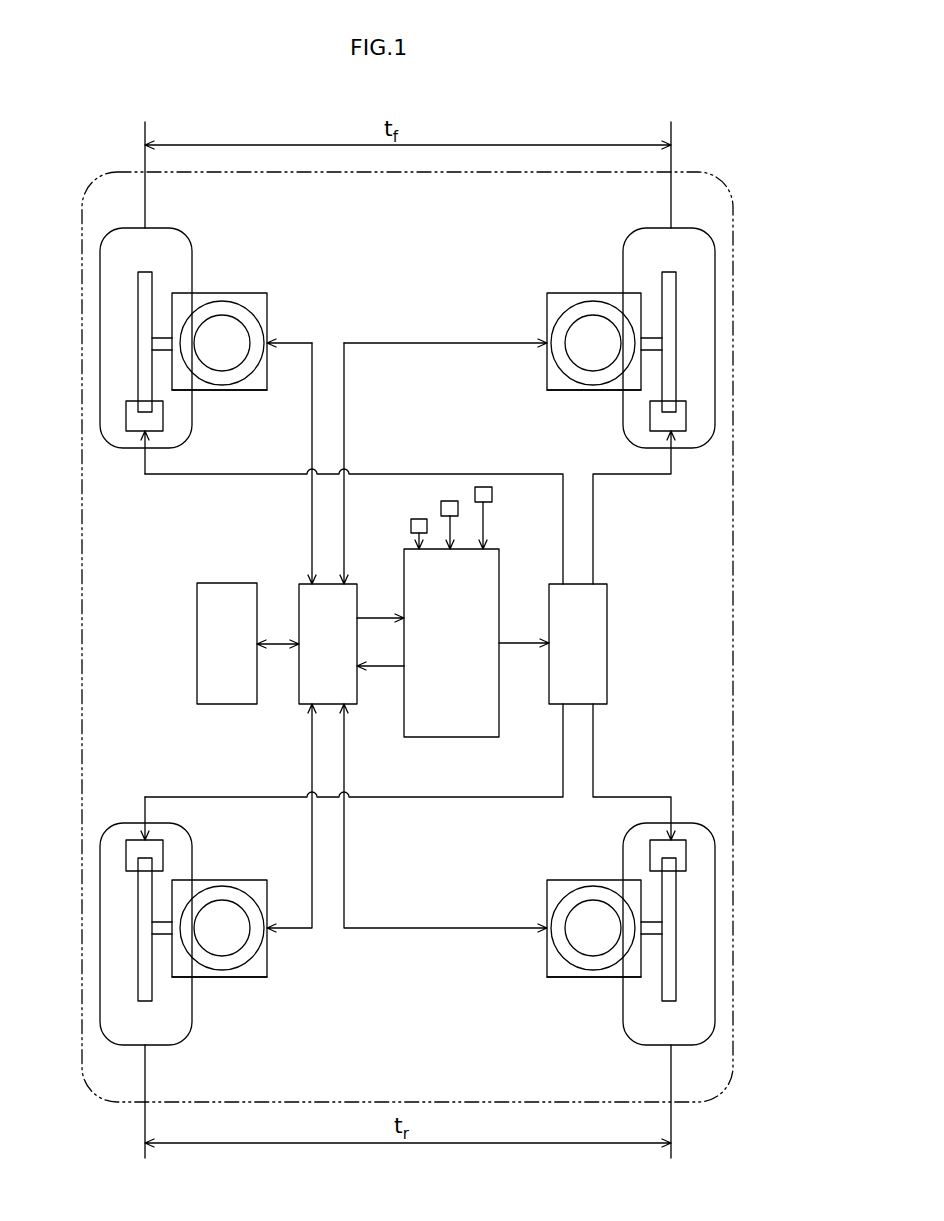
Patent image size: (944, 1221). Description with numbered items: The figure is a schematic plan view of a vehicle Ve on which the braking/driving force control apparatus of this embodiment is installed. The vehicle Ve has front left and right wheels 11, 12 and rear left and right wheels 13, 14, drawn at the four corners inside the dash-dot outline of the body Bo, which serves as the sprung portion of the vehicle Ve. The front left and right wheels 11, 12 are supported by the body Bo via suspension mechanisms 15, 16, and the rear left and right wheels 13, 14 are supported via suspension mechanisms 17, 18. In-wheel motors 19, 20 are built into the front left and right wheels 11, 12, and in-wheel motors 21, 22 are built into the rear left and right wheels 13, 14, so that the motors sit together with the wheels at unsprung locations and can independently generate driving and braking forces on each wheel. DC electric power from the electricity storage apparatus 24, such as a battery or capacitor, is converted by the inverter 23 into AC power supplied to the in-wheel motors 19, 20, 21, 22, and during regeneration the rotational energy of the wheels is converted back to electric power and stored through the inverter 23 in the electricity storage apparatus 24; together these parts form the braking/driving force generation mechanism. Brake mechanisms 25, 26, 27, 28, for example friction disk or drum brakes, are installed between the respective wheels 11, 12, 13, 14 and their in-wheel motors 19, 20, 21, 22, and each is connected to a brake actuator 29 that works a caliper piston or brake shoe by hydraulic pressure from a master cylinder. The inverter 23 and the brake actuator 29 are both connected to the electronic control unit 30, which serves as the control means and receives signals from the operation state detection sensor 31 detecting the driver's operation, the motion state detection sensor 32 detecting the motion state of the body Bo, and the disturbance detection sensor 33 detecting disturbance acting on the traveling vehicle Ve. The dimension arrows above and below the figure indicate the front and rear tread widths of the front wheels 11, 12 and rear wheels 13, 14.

The front left wheel 11 is at (155, 228).
The front right wheel 12 is at (657, 228).
The rear left wheel 13 is at (153, 1045).
The rear right wheel 14 is at (666, 1045).
The suspension mechanism 15 is at (223, 303).
The suspension mechanism 16 is at (594, 303).
The suspension mechanism 17 is at (218, 890).
The suspension mechanism 18 is at (596, 890).
The in-wheel motor 19 is at (233, 390).
The in-wheel motor 20 is at (576, 390).
The in-wheel motor 21 is at (252, 977).
The in-wheel motor 22 is at (572, 977).
The inverter 23 is at (300, 584).
The electricity storage apparatus 24 is at (210, 583).
The brake mechanism 25 is at (126, 414).
The brake mechanism 26 is at (686, 413).
The brake mechanism 27 is at (126, 852).
The brake mechanism 28 is at (686, 852).
The brake actuator 29 is at (607, 632).
The electronic control unit 30 is at (499, 558).
The operation state detection sensor 31 is at (411, 525).
The motion state detection sensor 32 is at (441, 506).
The disturbance detection sensor 33 is at (492, 494).
The vehicle Ve is at (723, 111).
The body Bo is at (735, 605).